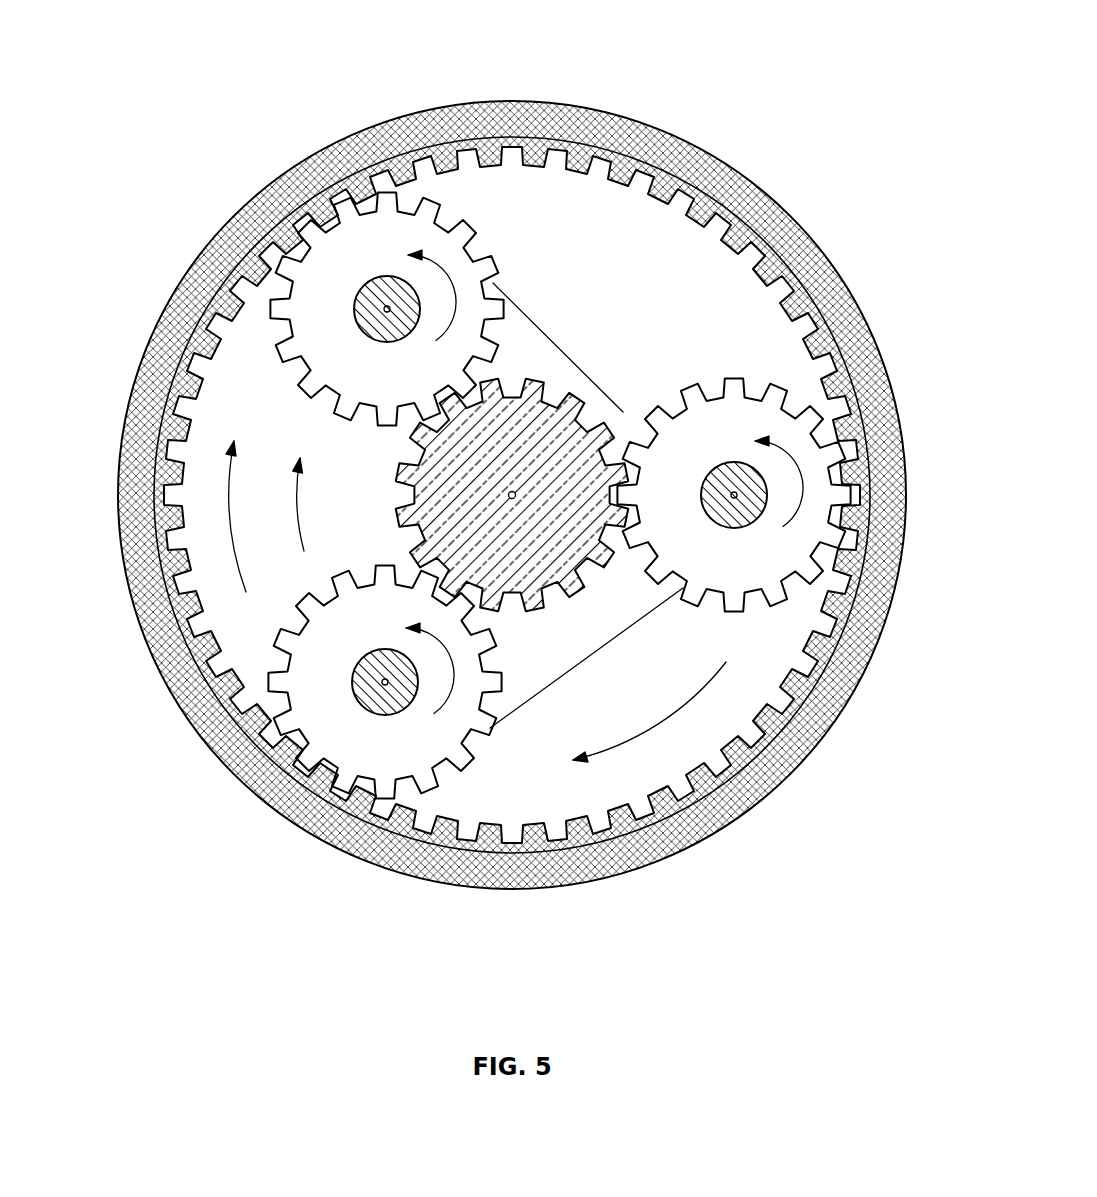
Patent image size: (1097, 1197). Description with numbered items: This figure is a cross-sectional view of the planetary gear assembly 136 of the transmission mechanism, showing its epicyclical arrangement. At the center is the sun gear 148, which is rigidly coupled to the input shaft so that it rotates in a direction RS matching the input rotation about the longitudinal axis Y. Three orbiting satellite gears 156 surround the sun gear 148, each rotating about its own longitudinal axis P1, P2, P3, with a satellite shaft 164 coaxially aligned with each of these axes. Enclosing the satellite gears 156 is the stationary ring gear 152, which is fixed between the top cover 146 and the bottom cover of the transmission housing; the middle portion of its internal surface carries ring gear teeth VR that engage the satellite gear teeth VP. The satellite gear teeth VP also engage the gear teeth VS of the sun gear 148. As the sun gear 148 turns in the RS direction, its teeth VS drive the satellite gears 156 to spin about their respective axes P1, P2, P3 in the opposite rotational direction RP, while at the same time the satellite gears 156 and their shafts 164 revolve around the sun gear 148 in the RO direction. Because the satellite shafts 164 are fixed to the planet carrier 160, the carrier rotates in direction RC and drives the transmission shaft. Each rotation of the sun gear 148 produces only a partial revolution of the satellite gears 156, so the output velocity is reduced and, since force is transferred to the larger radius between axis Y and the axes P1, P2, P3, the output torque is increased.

The planetary gear assembly 136 is at (822, 76).
The top cover 146 is at (782, 776).
The sun gear 148 is at (546, 440).
The ring gear 152 is at (753, 222).
The satellite gears 156 is at (270, 256).
The planet carrier 160 is at (548, 640).
The satellite shafts 164 is at (364, 286).
The longitudinal axis of first satellite gear P1 is at (387, 309).
The longitudinal axis of second satellite gear P2 is at (736, 497).
The longitudinal axis of third satellite gear P3 is at (386, 684).
The rotational direction of satellite gears RP is at (442, 269).
The rotational direction of sun gear RS is at (298, 455).
The revolving direction of satellite gears RO is at (227, 488).
The rotational direction of planet carrier RC is at (679, 709).
The satellite gear teeth VP is at (535, 380).
The ring gear teeth VR is at (612, 410).
The sun gear teeth VS is at (395, 470).
The longitudinal axis Y is at (512, 495).